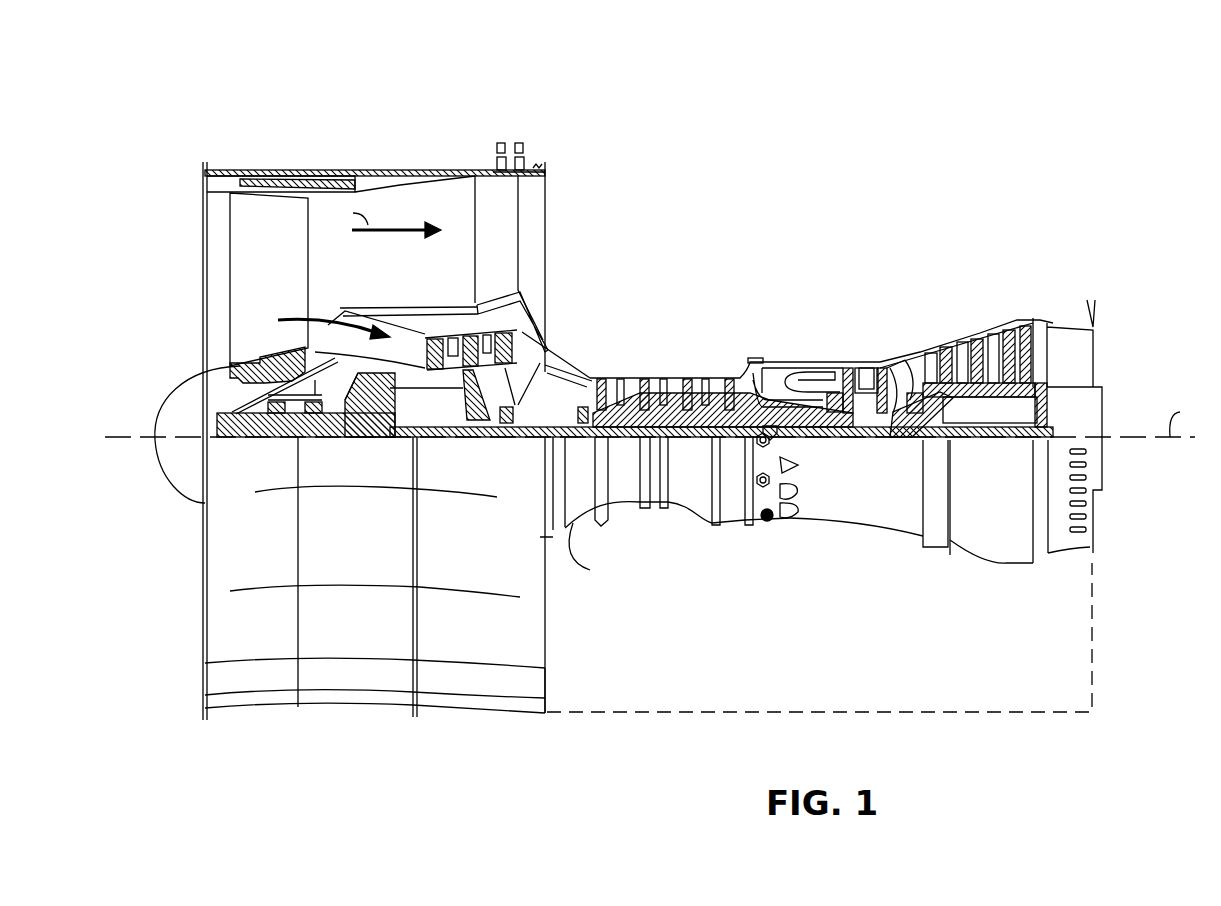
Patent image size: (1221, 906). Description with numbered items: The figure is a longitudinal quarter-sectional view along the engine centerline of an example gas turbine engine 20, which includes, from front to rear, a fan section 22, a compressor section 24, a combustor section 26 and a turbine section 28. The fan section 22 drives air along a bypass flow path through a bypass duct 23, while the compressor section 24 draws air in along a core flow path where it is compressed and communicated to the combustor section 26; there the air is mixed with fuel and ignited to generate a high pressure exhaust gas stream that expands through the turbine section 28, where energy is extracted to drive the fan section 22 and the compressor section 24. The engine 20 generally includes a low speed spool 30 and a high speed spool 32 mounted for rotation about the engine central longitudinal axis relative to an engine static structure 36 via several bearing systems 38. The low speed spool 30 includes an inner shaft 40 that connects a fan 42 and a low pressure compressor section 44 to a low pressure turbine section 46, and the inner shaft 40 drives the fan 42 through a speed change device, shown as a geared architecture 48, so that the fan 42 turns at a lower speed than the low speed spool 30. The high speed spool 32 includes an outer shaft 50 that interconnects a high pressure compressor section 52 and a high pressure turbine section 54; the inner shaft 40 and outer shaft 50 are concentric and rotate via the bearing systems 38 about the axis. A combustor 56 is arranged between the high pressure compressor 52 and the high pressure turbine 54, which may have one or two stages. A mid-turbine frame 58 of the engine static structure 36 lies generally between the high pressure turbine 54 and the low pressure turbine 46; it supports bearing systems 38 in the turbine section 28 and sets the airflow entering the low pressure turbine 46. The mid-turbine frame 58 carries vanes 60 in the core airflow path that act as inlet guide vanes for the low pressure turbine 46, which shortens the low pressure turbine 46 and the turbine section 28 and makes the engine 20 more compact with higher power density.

The gas turbine engine 20 is at (1012, 118).
The fan section 22 is at (395, 134).
The bypass duct 23 is at (312, 731).
The compressor section 24 is at (418, 251).
The combustor section 26 is at (785, 251).
The turbine section 28 is at (848, 251).
The low speed spool 30 is at (688, 449).
The high speed spool 32 is at (715, 410).
The engine static structure 36 is at (735, 535).
The bearing systems 38 is at (277, 443).
The inner shaft 40 is at (573, 523).
The fan 42 is at (279, 259).
The low pressure compressor section 44 is at (489, 335).
The low pressure turbine section 46 is at (982, 328).
The geared architecture 48 is at (380, 440).
The outer shaft 50 is at (813, 418).
The high pressure compressor section 52 is at (657, 370).
The high pressure turbine section 54 is at (865, 352).
The combustor 56 is at (797, 383).
The mid-turbine frame 58 is at (900, 341).
The vanes 60 is at (900, 377).